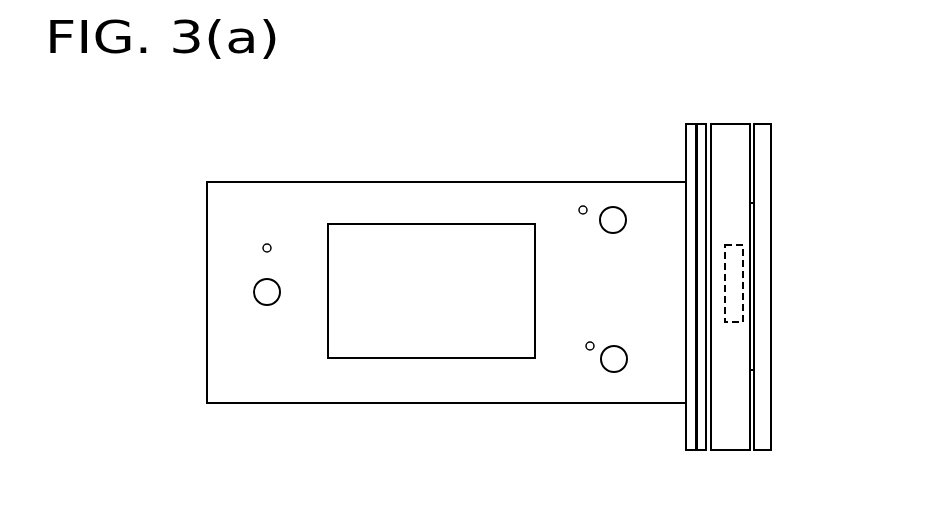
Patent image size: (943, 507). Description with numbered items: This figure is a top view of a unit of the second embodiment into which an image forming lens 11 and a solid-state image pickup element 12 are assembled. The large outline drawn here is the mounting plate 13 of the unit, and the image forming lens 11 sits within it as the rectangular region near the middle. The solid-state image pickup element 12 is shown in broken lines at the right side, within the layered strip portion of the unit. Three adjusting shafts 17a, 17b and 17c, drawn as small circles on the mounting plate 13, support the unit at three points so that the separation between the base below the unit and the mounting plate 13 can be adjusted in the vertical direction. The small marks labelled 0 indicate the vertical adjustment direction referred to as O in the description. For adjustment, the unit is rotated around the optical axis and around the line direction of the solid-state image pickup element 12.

The mounting plate 13 is at (253, 182).
The image forming lens 11 is at (393, 243).
The adjusting shaft 17a is at (262, 305).
The adjusting shaft 17b is at (618, 208).
The adjusting shaft 17c is at (612, 372).
The reference point 0 is at (263, 246).
The solid-state image pickup element 12 is at (737, 283).